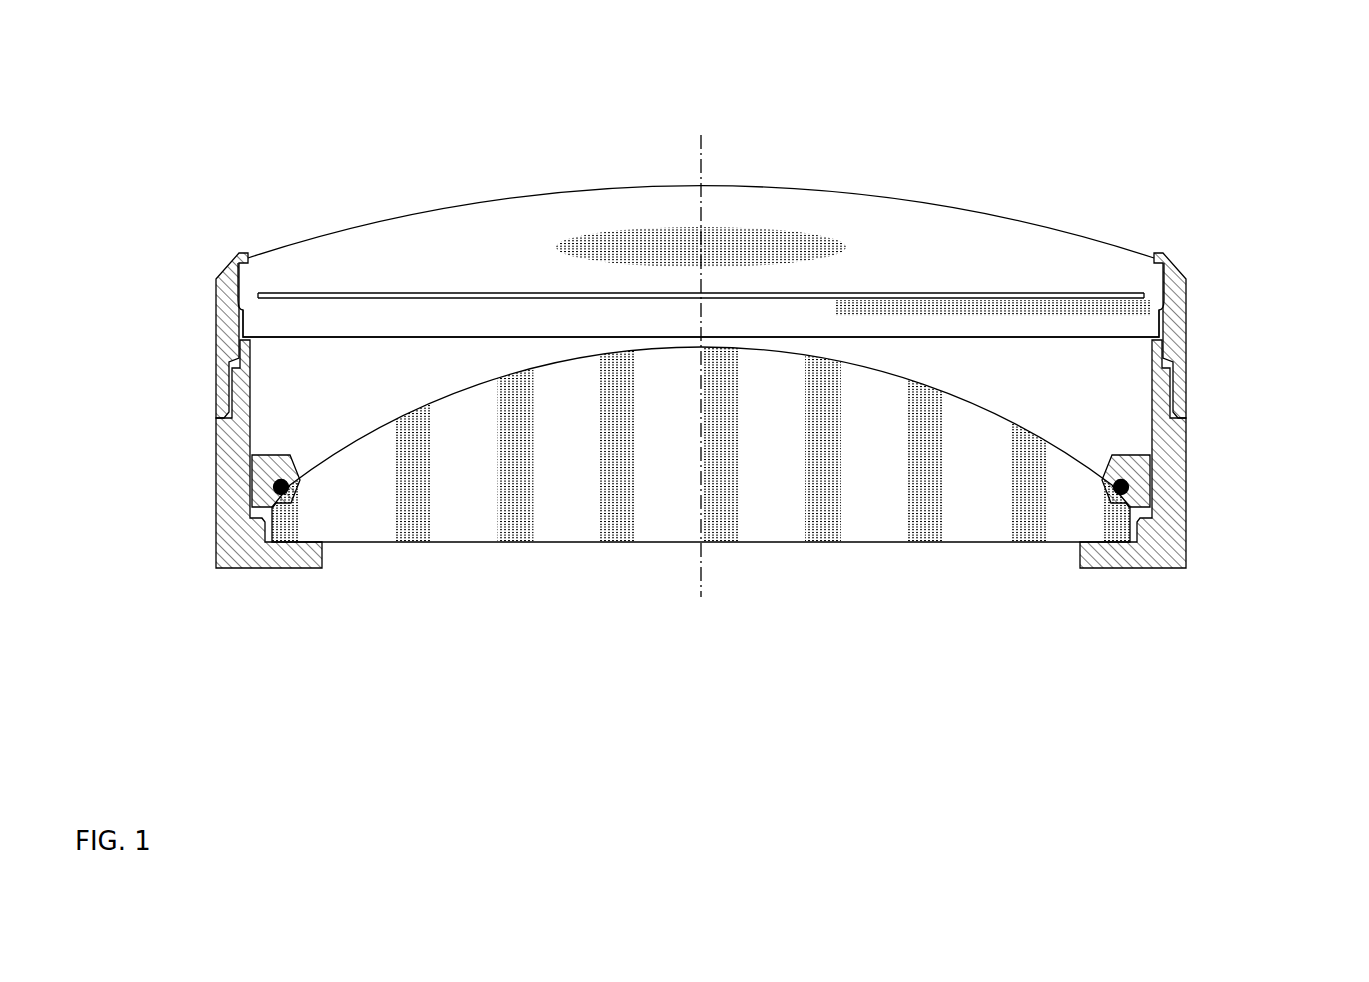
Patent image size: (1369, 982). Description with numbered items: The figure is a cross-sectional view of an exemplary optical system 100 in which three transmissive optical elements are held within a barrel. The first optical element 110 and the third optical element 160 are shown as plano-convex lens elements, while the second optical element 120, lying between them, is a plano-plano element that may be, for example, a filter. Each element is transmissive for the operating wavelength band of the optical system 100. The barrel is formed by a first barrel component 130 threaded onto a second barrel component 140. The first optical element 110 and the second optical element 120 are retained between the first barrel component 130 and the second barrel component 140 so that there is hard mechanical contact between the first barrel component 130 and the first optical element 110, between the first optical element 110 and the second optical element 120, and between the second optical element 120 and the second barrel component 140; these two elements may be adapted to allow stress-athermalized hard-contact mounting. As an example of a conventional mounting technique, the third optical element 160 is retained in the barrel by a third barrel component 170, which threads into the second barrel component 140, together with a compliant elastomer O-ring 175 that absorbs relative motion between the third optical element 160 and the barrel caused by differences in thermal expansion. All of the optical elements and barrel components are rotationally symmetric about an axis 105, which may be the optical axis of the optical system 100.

The optical system 100 is at (272, 98).
The axis 105 is at (701, 584).
The first optical element 110 is at (806, 185).
The second optical element 120 is at (945, 340).
The first barrel component 130 is at (1185, 335).
The second barrel component 140 is at (1185, 495).
The third optical element 160 is at (803, 543).
The third barrel component 170 is at (272, 455).
The elastomer O-ring 175 is at (287, 492).